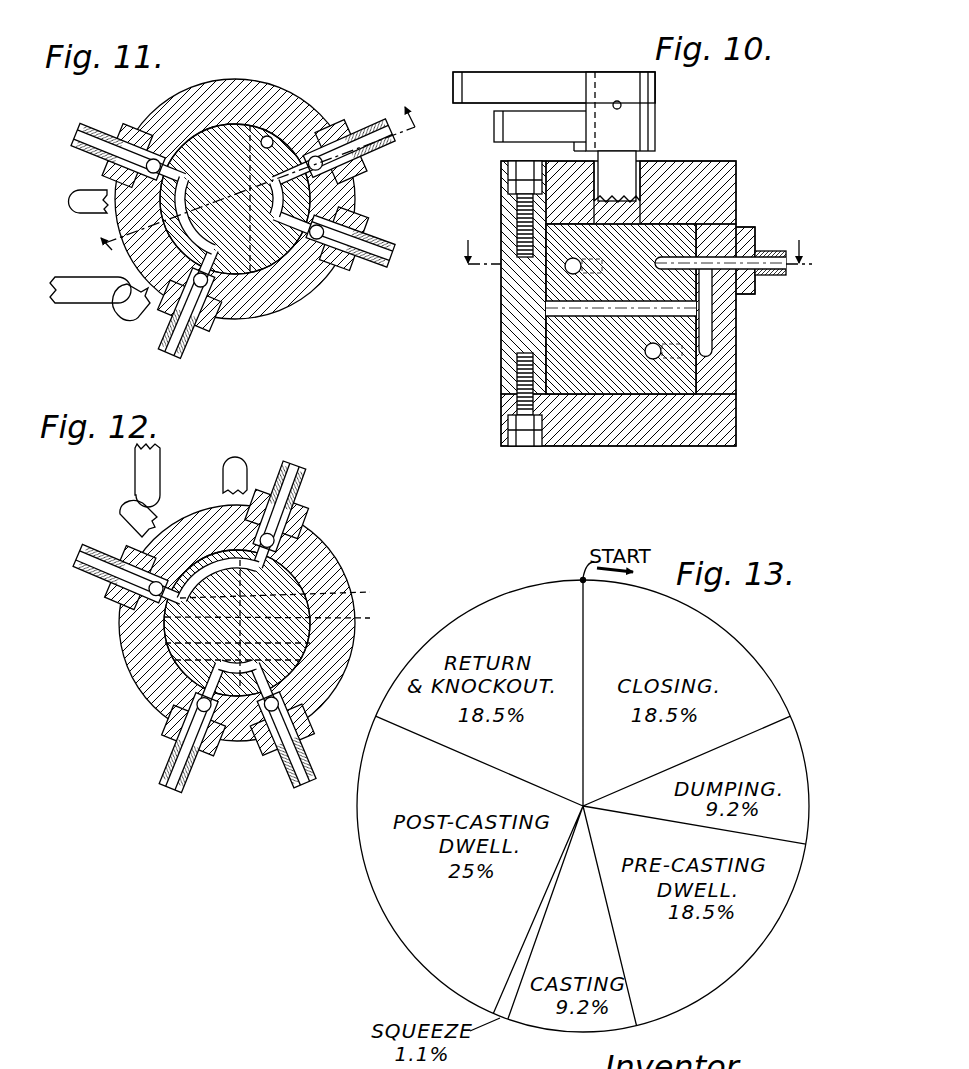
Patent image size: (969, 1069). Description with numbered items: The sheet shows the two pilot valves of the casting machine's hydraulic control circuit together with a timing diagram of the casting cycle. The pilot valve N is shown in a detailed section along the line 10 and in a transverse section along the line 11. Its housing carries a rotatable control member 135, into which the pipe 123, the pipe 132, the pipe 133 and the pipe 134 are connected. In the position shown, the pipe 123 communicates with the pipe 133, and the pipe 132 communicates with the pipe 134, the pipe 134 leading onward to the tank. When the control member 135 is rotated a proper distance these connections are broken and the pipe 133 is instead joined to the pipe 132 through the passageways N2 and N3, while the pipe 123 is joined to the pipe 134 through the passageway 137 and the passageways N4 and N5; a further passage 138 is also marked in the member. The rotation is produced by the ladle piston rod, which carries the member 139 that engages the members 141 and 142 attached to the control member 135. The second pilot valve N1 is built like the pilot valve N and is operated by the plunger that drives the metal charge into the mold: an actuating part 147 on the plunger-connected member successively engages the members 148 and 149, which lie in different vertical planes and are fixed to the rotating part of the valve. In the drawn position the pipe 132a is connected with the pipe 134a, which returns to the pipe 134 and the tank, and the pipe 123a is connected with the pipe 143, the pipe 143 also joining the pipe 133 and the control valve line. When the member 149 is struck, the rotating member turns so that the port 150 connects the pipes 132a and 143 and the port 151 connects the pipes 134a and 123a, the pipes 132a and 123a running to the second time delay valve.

In FIG. 11, the pilot valve N is at (203, 86).
In FIG. 10, the pilot valve N is at (697, 166).
In FIG. 12, the pilot valve N1 is at (337, 567).
In FIG. 11, the passageway N2 is at (318, 239).
In FIG. 11, the passageway N3 is at (150, 160).
In FIG. 11, the passageway N4 is at (322, 166).
In FIG. 11, the passageway N5 is at (205, 287).
In FIG. 11, the section line 10— 10 is at (249, 177).
In FIG. 10, the section line 11— 11 is at (638, 239).
In FIG. 11, the pipe 123 is at (333, 128).
In FIG. 10, the pipe 123 is at (762, 276).
In FIG. 10, the pipe 123a is at (708, 326).
In FIG. 12, the pipe 123a is at (283, 771).
In FIG. 11, the pipe 132 is at (112, 156).
In FIG. 12, the pipe 132a is at (300, 479).
In FIG. 11, the pipe 133 is at (350, 247).
In FIG. 11, the pipe 134 is at (172, 331).
In FIG. 12, the pipe 134a is at (108, 572).
In FIG. 11, the rotatable control member 135 is at (222, 140).
In FIG. 10, the rotatable control member 135 is at (577, 339).
In FIG. 11, the passageway 137 is at (271, 137).
In FIG. 10, the passageway 137 is at (650, 361).
In FIG. 11, the passage 138 is at (212, 240).
In FIG. 10, the passage 138 is at (546, 311).
In FIG. 11, the member 139 is at (62, 284).
In FIG. 11, the member 141 is at (77, 198).
In FIG. 10, the member 141 is at (486, 85).
In FIG. 11, the member 142 is at (116, 307).
In FIG. 10, the member 142 is at (530, 120).
In FIG. 12, the pipe 143 is at (170, 761).
In FIG. 12, the actuating part 147 is at (135, 463).
In FIG. 12, the member 148 is at (122, 508).
In FIG. 12, the member 149 is at (241, 462).
In FIG. 12, the port 150 is at (280, 570).
In FIG. 12, the port 151 is at (287, 634).